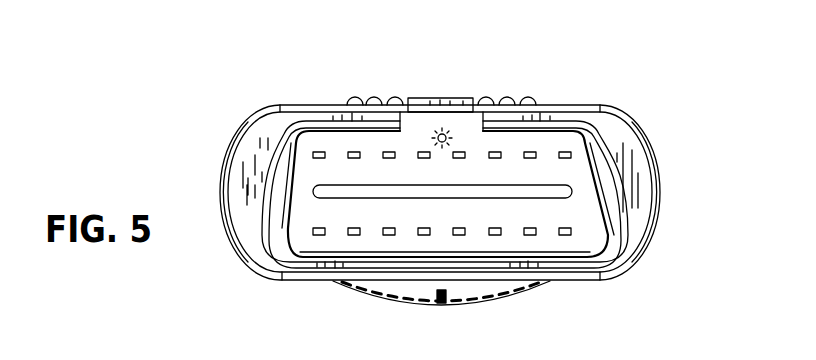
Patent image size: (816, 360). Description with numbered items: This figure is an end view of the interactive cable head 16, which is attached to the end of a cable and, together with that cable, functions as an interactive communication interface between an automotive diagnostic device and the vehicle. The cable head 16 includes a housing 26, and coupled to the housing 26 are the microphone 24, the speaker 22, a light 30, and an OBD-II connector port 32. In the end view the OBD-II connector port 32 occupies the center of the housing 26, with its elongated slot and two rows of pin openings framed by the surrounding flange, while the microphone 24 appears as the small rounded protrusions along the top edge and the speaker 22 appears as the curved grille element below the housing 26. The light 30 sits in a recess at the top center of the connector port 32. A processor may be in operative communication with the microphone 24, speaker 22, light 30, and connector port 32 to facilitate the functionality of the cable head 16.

The cable head 16 is at (608, 78).
The speaker 22 is at (370, 294).
The microphone 24 is at (533, 90).
The housing 26 is at (640, 187).
The light 30 is at (442, 130).
The OBD-II connector port 32 is at (570, 180).